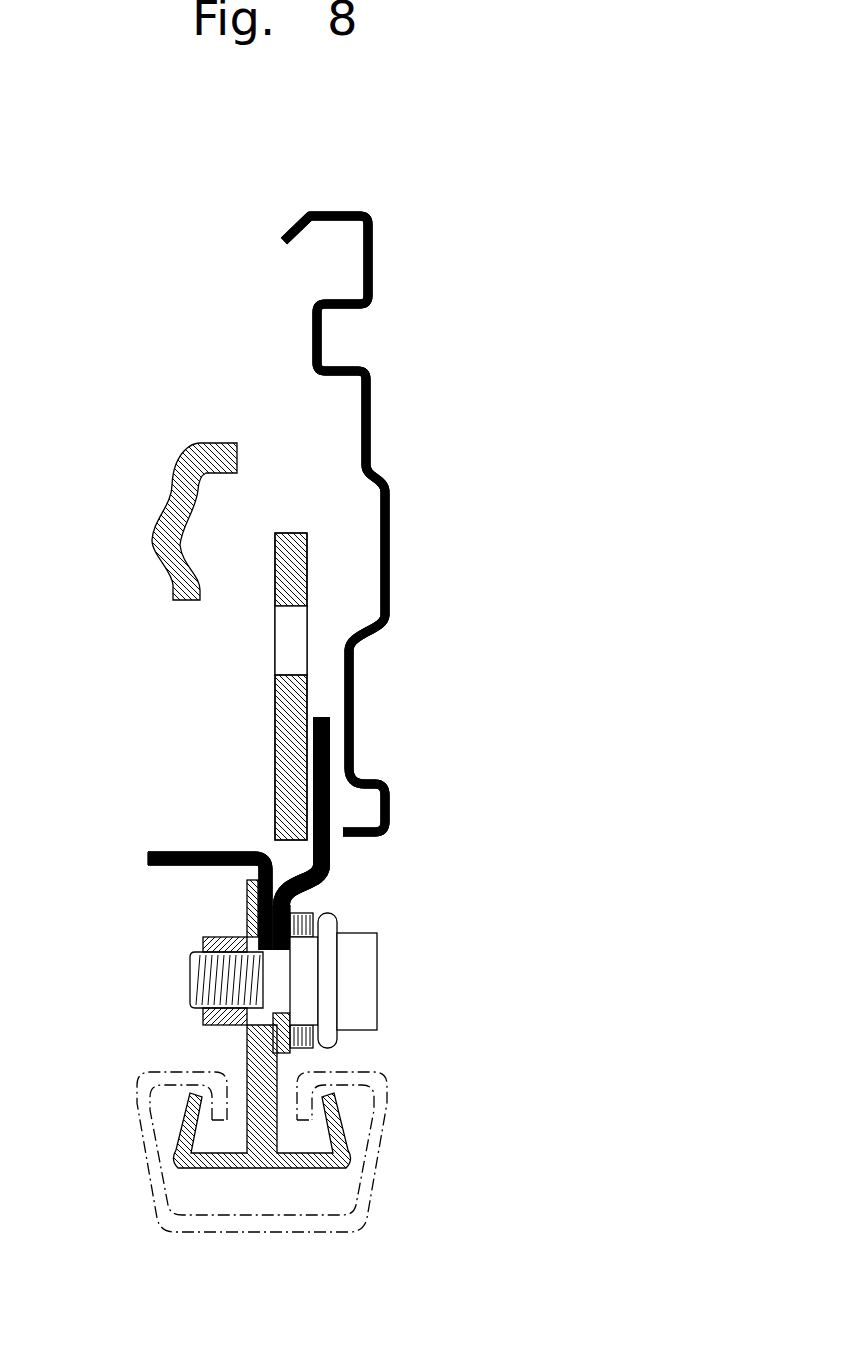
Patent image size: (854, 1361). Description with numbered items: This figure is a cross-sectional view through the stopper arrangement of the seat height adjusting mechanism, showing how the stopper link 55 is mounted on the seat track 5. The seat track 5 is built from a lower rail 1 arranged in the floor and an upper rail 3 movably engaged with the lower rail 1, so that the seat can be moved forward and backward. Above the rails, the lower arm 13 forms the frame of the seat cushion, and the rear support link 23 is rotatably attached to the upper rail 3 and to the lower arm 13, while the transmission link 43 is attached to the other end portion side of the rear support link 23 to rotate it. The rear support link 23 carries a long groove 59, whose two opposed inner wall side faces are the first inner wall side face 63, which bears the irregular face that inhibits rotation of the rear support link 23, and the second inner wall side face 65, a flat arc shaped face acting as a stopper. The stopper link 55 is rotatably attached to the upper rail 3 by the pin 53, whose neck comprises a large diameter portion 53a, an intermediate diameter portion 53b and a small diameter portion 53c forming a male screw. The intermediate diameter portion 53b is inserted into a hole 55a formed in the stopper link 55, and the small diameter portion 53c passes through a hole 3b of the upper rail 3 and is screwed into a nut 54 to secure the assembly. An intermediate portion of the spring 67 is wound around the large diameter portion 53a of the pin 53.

The lower rail 1 is at (385, 1145).
The upper rail 3 is at (333, 1168).
The hole 3b is at (247, 923).
The seat track 5 is at (445, 1193).
The lower arm 13 is at (371, 420).
The rear support link 23 is at (314, 659).
The transmission link 43 is at (177, 463).
The pin 53 is at (268, 951).
The large diameter portion 53a is at (312, 956).
The intermediate diameter portion 53b is at (280, 993).
The small diameter portion 53c is at (190, 967).
The nut 54 is at (203, 938).
The stopper link 55 is at (379, 867).
The hole 55a is at (313, 905).
The long groove 59 is at (295, 648).
The first inner wall side face 63 is at (275, 606).
The second inner wall side face 65 is at (275, 672).
The spring 67 is at (312, 910).